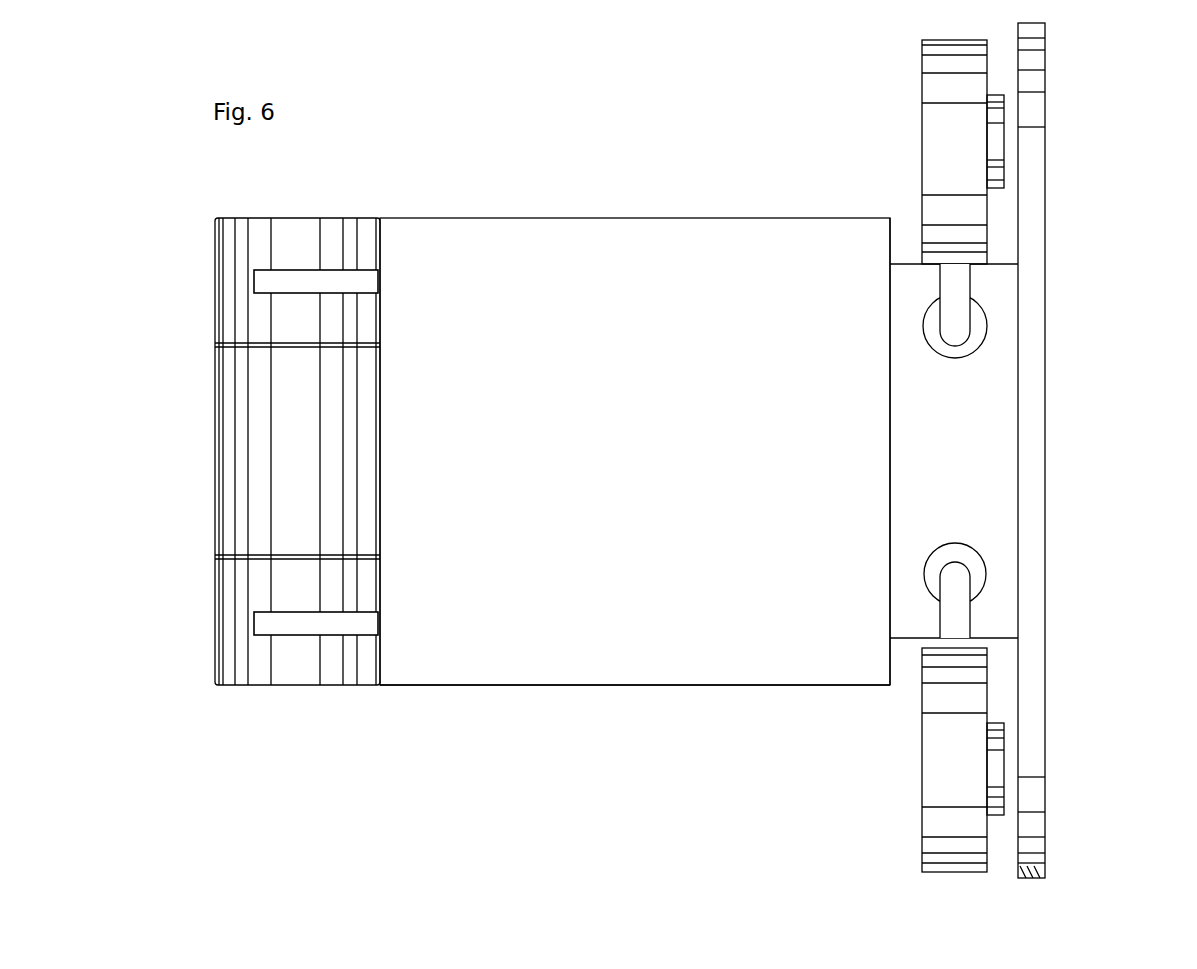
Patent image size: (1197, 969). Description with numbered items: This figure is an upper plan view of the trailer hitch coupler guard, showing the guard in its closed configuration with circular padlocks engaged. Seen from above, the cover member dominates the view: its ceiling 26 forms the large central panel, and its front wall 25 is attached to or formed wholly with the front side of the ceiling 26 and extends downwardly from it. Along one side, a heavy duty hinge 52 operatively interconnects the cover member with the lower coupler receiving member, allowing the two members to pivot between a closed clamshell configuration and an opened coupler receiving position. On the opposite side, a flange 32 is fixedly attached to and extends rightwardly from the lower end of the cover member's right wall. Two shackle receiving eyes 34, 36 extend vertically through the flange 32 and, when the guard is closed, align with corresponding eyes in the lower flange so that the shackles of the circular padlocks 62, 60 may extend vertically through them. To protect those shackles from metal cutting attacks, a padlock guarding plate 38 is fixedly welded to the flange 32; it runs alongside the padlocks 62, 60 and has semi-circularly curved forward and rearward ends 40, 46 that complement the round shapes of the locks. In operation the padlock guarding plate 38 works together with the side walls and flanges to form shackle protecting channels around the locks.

The front wall 25 is at (631, 685).
The ceiling 26 is at (588, 267).
The flange 32 is at (977, 495).
The shackle receiving eye 34 is at (935, 323).
The shackle receiving eye 36 is at (964, 556).
The padlock guarding plate 38 is at (1033, 412).
The forward end 40 is at (1033, 59).
The rearward end 46 is at (1033, 845).
The heavy duty hinge 52 is at (255, 448).
The circular padlock 60 is at (948, 772).
The circular padlock 62 is at (940, 137).